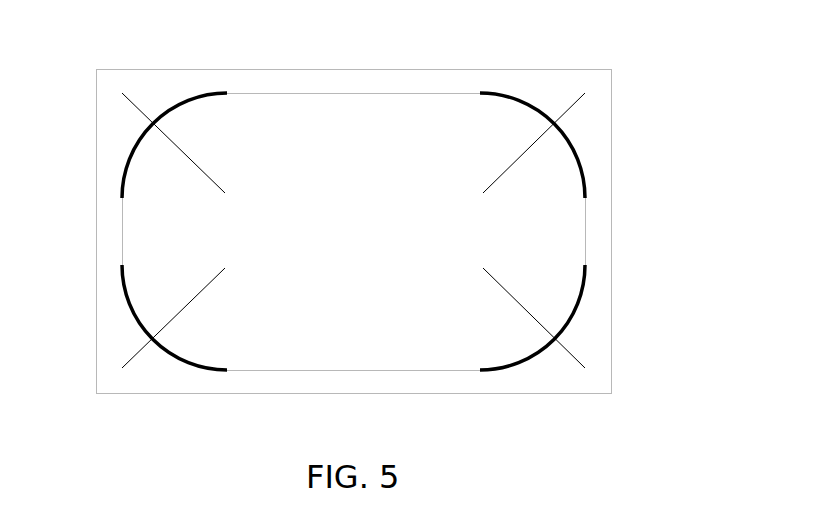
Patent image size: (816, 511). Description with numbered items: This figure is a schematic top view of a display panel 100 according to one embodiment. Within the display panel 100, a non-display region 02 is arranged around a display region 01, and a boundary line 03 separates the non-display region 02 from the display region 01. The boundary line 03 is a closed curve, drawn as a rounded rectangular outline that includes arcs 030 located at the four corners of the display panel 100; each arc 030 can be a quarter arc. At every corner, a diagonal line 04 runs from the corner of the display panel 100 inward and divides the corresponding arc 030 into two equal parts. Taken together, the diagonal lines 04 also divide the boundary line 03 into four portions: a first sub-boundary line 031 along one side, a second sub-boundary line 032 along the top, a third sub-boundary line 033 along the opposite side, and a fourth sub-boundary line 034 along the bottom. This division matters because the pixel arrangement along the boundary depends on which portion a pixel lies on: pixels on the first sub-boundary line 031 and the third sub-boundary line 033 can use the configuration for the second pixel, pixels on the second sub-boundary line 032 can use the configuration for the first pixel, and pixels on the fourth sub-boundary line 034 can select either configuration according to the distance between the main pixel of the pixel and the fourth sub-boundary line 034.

The display panel 100 is at (355, 222).
The display region 01 is at (355, 227).
The non-display region 02 is at (178, 72).
The boundary line 03 is at (355, 227).
The arc 030 is at (543, 110).
The first sub-boundary line 031 is at (122, 257).
The second sub-boundary line 032 is at (293, 92).
The third sub-boundary line 033 is at (586, 226).
The fourth sub-boundary line 034 is at (337, 371).
The diagonal line 04 is at (200, 168).